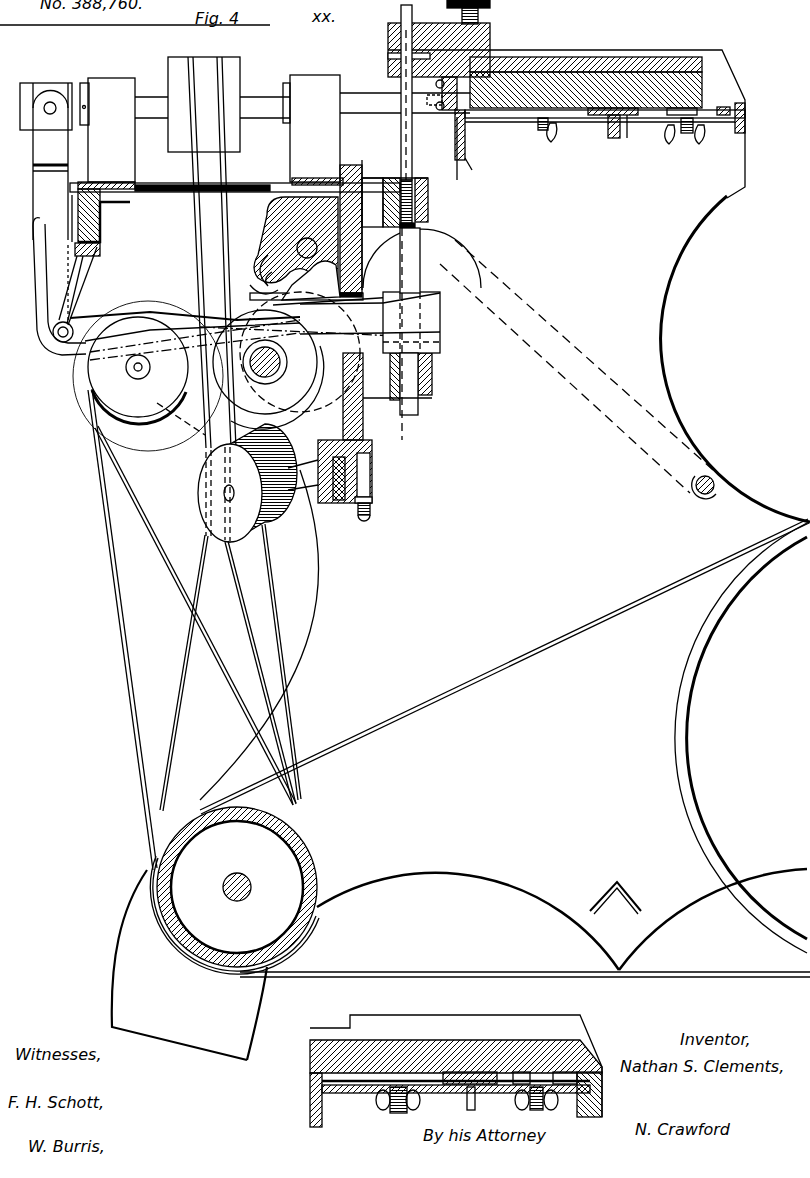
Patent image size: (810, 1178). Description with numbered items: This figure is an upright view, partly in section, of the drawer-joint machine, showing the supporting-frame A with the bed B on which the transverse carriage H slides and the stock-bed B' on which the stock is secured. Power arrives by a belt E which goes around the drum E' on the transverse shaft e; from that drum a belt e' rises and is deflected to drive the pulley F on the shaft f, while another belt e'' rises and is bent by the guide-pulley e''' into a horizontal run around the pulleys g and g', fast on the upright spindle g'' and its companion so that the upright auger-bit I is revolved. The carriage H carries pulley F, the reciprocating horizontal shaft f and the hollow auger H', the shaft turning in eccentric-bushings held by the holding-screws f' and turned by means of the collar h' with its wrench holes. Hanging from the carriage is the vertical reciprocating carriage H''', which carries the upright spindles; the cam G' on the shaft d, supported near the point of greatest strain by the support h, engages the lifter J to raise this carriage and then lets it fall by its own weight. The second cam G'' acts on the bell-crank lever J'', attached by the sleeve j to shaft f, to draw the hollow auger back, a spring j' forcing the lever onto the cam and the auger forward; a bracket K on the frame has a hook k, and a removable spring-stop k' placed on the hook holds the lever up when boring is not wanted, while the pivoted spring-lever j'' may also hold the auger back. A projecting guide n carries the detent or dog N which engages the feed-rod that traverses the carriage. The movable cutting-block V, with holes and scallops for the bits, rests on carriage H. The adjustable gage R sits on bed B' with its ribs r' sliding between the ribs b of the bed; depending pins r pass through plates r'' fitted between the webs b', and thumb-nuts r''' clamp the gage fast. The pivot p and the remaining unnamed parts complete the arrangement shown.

The supporting-frame A is at (540, 472).
The belt E is at (505, 761).
The drum E' is at (234, 890).
The transverse shaft e is at (247, 885).
The belt e' is at (239, 434).
The belt e'' is at (277, 590).
The guide-pulley e''' is at (148, 376).
The pulley F is at (203, 92).
The bearing block F''' is at (214, 128).
The shaft f is at (151, 107).
The holding-screws f' is at (276, 80).
The cam G' is at (265, 362).
The cam G'' is at (300, 352).
The shaft d is at (265, 378).
The support h is at (278, 388).
The collar h' is at (285, 88).
The carriage H is at (263, 227).
The hollow auger H' is at (441, 108).
The vertical reciprocating carriage H''' is at (375, 437).
The upright auger-bit I is at (398, 143).
The sleeve j is at (46, 145).
The spring j' is at (89, 286).
The pivoted spring-lever j'' is at (69, 324).
The lifter J is at (311, 280).
The bell-crank lever J'' is at (205, 270).
The hook k is at (242, 278).
The removable spring-stop k' is at (173, 168).
The bracket K is at (270, 225).
The detent or dog N is at (305, 258).
The projecting guide n is at (428, 215).
The pulley g is at (431, 334).
The pulley g' is at (484, 12).
The upright shaft or spindle g'' is at (422, 291).
The movable cutting-block V is at (401, 90).
The top block Z' is at (451, 49).
The longitudinal adjustable gage R is at (582, 57).
The cushion u is at (681, 88).
The cushion strip u' is at (586, 67).
The bed B is at (173, 222).
The stock-bed B' is at (540, 622).
The plate B'' is at (600, 133).
The rib b is at (544, 615).
The depending web b' is at (600, 645).
The depending pin r is at (540, 628).
The rib r' is at (550, 1046).
The plate r'' is at (640, 122).
The thumb-nut r''' is at (503, 621).
The pivot pin p is at (578, 369).